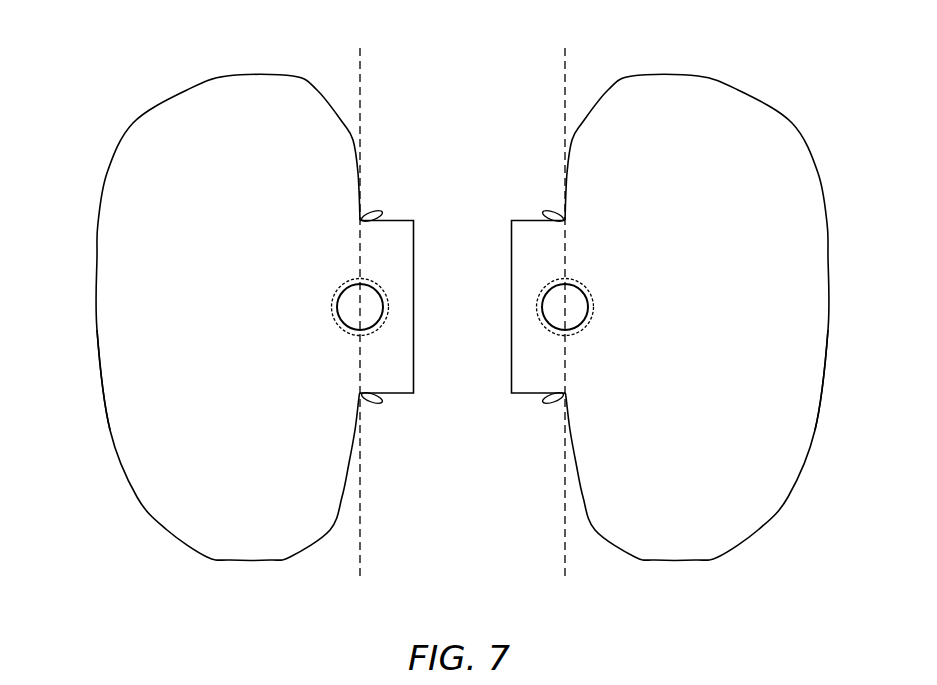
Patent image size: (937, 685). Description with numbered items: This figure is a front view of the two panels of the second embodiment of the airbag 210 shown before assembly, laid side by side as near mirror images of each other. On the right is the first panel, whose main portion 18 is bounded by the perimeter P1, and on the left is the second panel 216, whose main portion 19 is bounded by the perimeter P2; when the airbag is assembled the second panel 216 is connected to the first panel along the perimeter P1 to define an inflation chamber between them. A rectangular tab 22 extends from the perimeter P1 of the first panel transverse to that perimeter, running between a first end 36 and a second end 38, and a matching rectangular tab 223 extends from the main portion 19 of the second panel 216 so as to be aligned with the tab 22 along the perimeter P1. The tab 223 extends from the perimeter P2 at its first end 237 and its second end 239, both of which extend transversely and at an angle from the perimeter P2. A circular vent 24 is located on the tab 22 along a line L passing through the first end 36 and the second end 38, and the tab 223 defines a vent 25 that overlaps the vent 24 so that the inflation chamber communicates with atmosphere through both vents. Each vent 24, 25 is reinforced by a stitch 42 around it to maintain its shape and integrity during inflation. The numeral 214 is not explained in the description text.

The airbag 210 is at (790, 31).
The perimeter of the first panel P1 is at (790, 122).
The perimeter of the main portion of the second panel P2 is at (135, 122).
The main portion of the first panel 18 is at (731, 317).
The main portion of the second panel 19 is at (194, 317).
The tab 22 is at (511, 243).
The tab 223 is at (415, 243).
The vent 24 is at (592, 300).
The vent 25 is at (347, 318).
The first end of the tab 36 is at (564, 224).
The second end of the tab 38 is at (563, 392).
The first end of the tab 237 is at (361, 224).
The second end of the tab 239 is at (362, 392).
The stitch 42 is at (334, 299).
The outer edge of first pad 214 is at (804, 365).
The second panel 216 is at (119, 365).